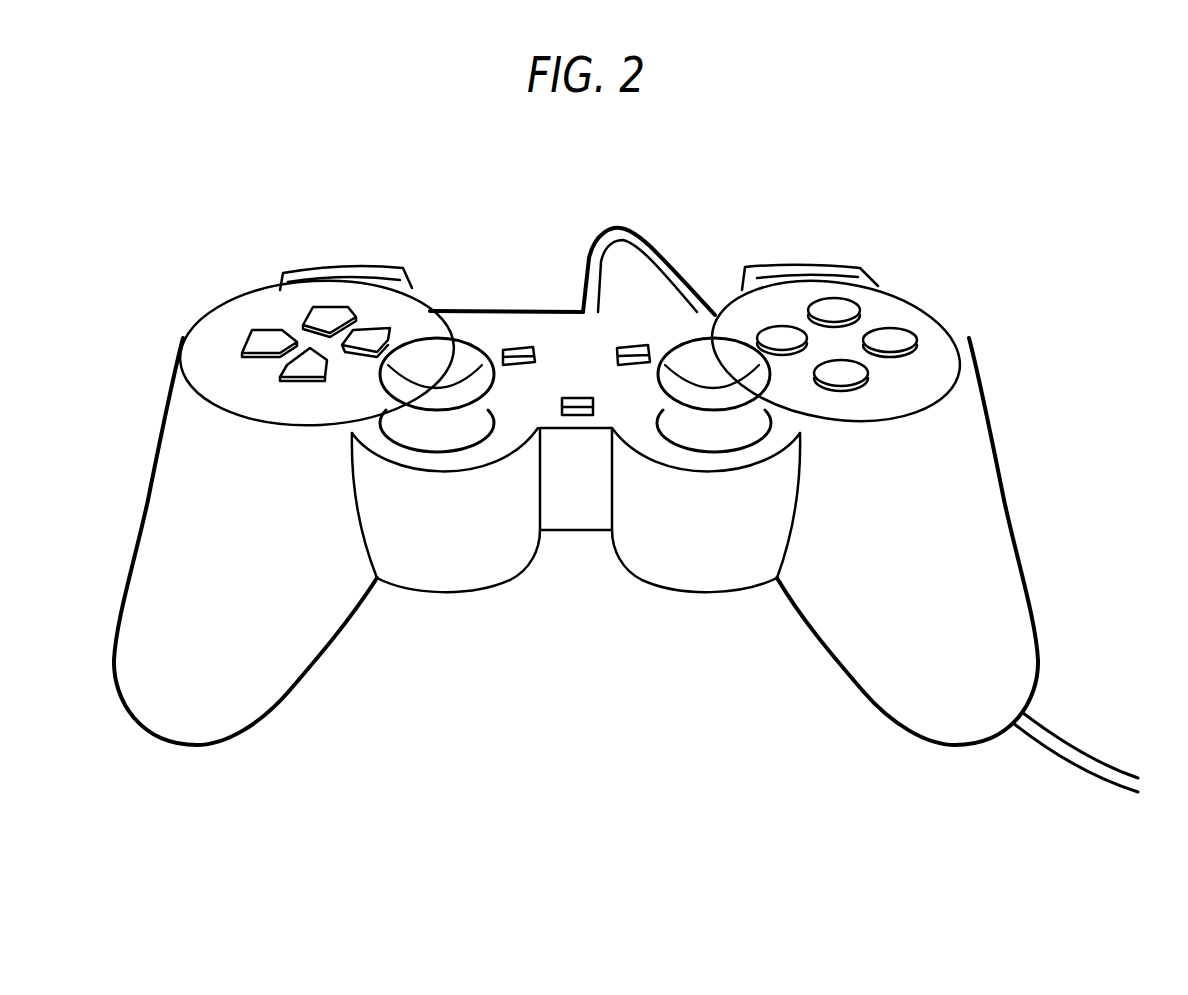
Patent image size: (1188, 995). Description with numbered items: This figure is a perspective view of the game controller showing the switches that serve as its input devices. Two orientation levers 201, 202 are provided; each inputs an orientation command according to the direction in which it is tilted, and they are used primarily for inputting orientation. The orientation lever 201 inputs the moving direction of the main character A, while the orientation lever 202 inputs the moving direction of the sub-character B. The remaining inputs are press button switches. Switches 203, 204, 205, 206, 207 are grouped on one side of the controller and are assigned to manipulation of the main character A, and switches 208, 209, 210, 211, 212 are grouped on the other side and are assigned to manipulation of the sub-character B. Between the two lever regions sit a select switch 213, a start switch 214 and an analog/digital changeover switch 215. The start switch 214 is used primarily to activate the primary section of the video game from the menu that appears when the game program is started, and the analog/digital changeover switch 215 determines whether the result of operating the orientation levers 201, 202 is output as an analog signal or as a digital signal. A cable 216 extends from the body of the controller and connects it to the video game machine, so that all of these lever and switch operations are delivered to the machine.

The orientation lever 201 is at (437, 398).
The orientation lever 202 is at (723, 398).
The switch 203 is at (263, 343).
The switch 204 is at (323, 315).
The switch 205 is at (373, 333).
The switch 206 is at (302, 369).
The switch 207 is at (340, 266).
The switch 208 is at (775, 337).
The switch 209 is at (837, 312).
The switch 210 is at (893, 340).
The switch 211 is at (843, 375).
The switch 212 is at (810, 266).
The select switch 213 is at (517, 345).
The start switch 214 is at (636, 345).
The analog/digital changeover switch 215 is at (578, 413).
The cable 216 is at (1085, 755).